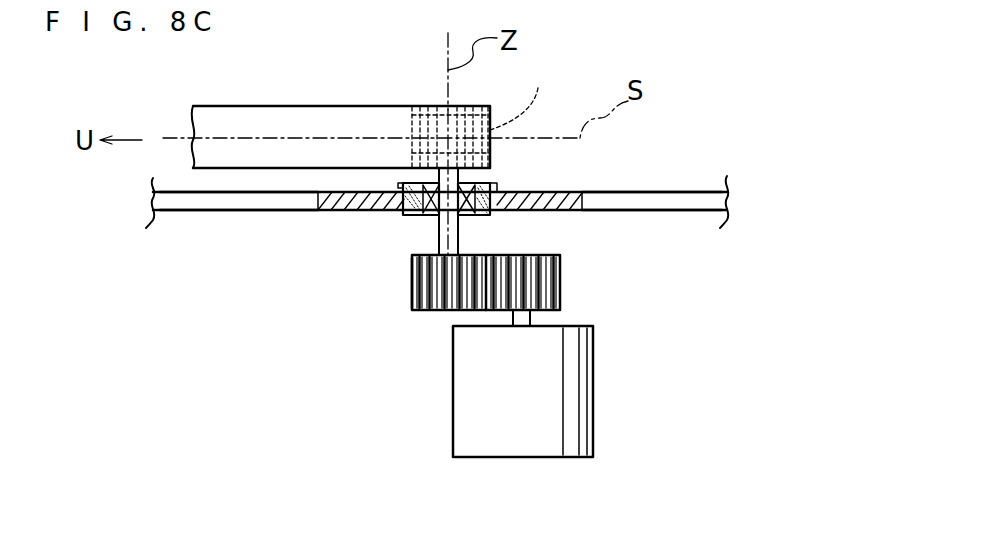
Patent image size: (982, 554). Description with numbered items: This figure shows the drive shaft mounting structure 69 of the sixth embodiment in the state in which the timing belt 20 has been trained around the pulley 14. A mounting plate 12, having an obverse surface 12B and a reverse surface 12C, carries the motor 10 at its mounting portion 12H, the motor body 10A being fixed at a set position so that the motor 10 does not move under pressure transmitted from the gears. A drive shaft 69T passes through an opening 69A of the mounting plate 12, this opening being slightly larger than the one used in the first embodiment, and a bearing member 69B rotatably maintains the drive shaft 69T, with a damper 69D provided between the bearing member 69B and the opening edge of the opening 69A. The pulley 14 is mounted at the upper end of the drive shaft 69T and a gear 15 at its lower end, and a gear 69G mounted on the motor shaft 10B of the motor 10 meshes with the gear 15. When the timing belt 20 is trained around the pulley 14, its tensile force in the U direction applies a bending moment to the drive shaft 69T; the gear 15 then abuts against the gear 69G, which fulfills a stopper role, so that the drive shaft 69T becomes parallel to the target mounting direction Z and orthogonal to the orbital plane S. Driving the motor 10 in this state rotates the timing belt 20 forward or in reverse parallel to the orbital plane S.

The timing belt 20 is at (218, 106).
The mounting portion 12H is at (310, 192).
The damper 69D is at (407, 183).
The pulley 14 is at (525, 96).
The drive shaft mounting structure 69 is at (668, 78).
The obverse surface 12B is at (680, 191).
The mounting plate 12 is at (728, 200).
The reverse surface 12C is at (218, 211).
The opening 69A is at (410, 218).
The bearing member 69B is at (470, 218).
The drive shaft 69T is at (439, 242).
The gear 69G is at (560, 278).
The gear 15 is at (412, 290).
The motor shaft 10B is at (530, 320).
The motor body 10A is at (453, 401).
The motor 10 is at (335, 370).